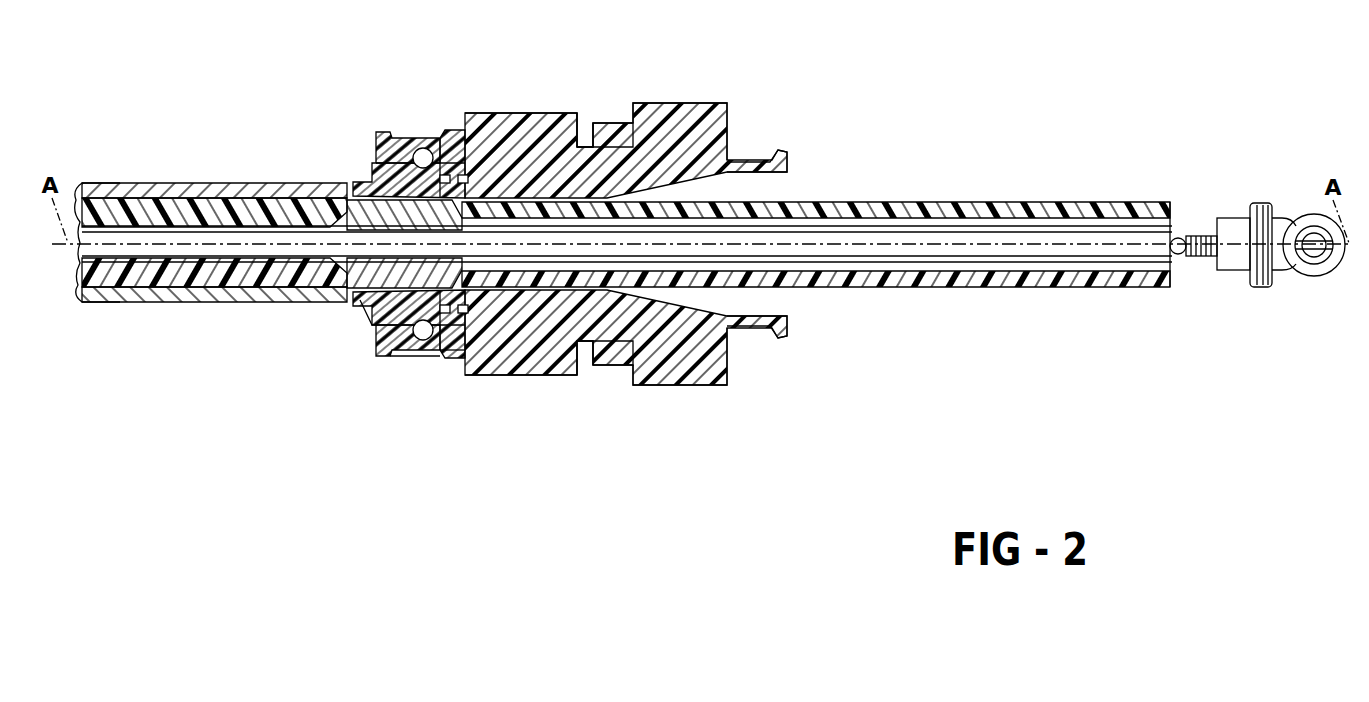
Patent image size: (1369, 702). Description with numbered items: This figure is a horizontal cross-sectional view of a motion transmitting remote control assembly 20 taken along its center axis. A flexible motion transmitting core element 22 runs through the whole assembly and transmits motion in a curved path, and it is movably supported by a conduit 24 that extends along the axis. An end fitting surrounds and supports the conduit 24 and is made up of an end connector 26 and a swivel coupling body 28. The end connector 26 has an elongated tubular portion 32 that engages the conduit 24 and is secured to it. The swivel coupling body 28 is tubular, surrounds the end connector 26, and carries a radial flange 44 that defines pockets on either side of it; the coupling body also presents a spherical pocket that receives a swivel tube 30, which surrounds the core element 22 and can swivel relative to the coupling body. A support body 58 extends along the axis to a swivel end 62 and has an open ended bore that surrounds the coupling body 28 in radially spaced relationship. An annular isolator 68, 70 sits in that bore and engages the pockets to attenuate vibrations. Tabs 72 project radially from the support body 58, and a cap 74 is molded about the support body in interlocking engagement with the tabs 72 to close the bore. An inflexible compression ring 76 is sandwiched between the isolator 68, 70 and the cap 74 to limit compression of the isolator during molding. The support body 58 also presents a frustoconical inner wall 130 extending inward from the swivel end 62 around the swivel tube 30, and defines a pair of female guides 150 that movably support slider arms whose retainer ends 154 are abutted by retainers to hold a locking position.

The motion transmitting remote control assembly 20 is at (245, 68).
The flexible motion transmitting core element 22 is at (920, 240).
The conduit 24 is at (86, 193).
The end connector 26 is at (152, 183).
The swivel coupling body 28 is at (350, 290).
The swivel tube 30 is at (790, 290).
The elongated tubular portion 32 is at (222, 205).
The flange 44 is at (452, 350).
The support body 58 is at (585, 127).
The swivel end 62 is at (790, 322).
The annular isolator 68 is at (405, 140).
The annular isolator 70 is at (466, 128).
The tabs 72 is at (427, 355).
The cap 74 is at (377, 350).
The inflexible compression ring 76 is at (364, 160).
The frustoconical inner wall 130 is at (786, 160).
The female guides 150 is at (522, 110).
The retainer ends 154 is at (607, 122).